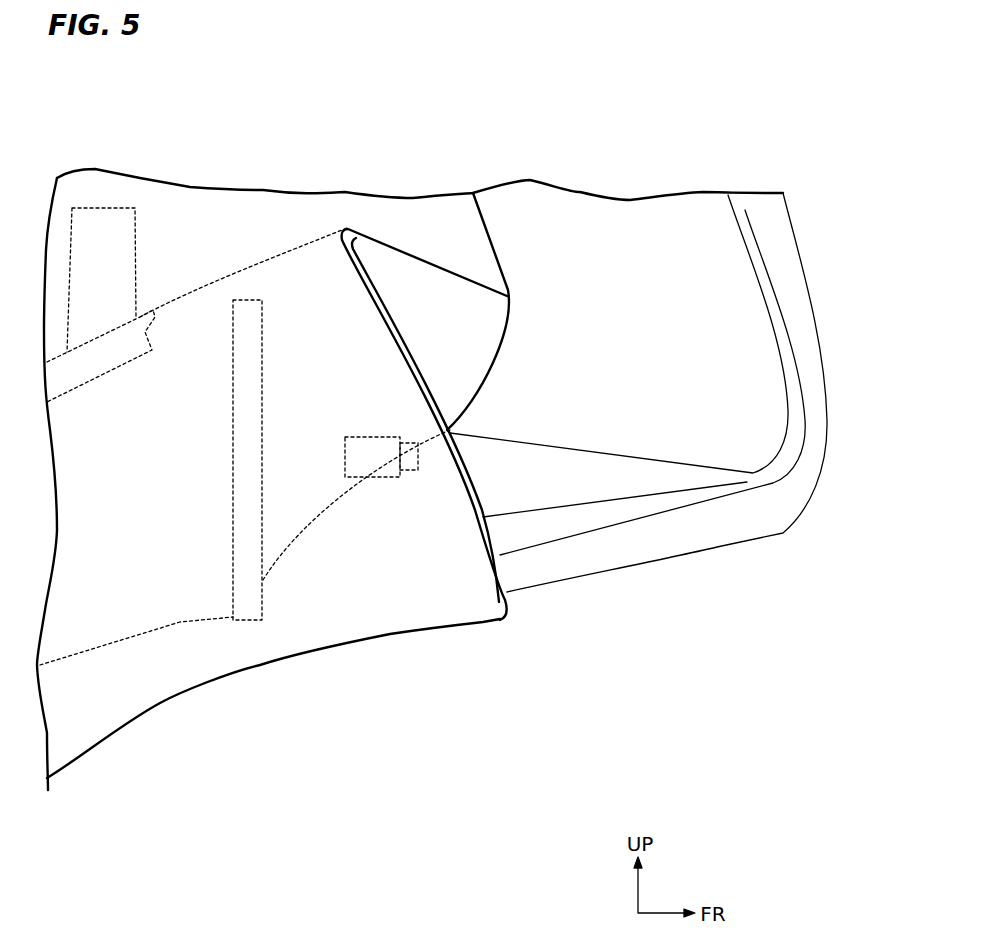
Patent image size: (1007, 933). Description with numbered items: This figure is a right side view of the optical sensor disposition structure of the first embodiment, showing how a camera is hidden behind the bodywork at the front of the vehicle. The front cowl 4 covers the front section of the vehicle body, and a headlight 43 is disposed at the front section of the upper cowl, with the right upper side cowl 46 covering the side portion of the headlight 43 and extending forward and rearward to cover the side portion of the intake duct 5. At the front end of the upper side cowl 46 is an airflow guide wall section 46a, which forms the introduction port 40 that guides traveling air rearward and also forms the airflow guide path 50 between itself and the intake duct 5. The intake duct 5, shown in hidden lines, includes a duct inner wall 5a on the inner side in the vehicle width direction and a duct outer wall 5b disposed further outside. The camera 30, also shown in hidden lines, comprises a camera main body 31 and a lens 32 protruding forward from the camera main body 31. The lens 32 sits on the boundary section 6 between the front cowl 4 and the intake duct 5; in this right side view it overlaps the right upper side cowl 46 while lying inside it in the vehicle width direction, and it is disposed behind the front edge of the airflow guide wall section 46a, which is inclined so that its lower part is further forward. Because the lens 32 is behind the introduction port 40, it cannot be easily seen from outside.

The front cowl 4 is at (793, 232).
The introduction port 40 is at (392, 316).
The headlight 43 is at (725, 317).
The upper side cowl 46 is at (115, 707).
The airflow guide wall section 46a is at (403, 387).
The airflow guide path 50 is at (333, 403).
The intake duct 5 is at (228, 855).
The duct inner wall 5a is at (313, 527).
The duct outer wall 5b is at (182, 627).
The boundary section 6 is at (427, 443).
The camera 30 is at (390, 776).
The camera main body 31 is at (390, 477).
The lens 32 is at (408, 470).